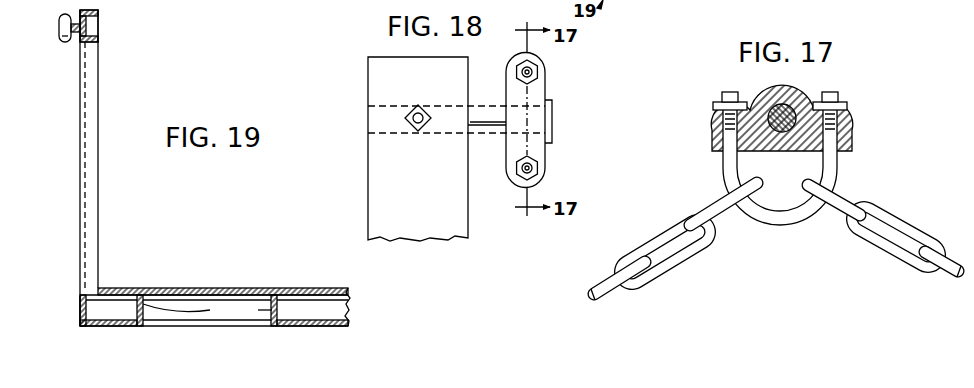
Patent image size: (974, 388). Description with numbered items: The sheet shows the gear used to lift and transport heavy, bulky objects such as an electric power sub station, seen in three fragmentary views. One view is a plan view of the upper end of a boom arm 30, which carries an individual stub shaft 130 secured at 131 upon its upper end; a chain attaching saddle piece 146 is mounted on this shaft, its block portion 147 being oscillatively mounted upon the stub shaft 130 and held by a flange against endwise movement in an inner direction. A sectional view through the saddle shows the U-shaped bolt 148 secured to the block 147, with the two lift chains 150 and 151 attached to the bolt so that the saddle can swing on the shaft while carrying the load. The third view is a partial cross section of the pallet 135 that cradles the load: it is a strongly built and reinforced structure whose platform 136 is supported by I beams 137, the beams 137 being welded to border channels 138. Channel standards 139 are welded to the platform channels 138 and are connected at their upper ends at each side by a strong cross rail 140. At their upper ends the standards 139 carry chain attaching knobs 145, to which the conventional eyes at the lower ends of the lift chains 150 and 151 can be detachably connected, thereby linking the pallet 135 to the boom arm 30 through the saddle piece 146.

In FIG. 18, the boom arm 30 is at (368, 182).
In FIG. 18, the stub shaft 130 is at (484, 128).
In FIG. 18, the securing point 131 is at (419, 132).
In FIG. 19, the pallet 135 is at (193, 286).
In FIG. 19, the platform 136 is at (262, 292).
In FIG. 19, the I beam 137 is at (207, 310).
In FIG. 19, the border channel 138 is at (80, 306).
In FIG. 19, the channel standard 139 is at (90, 98).
In FIG. 19, the cross rail 140 is at (98, 14).
In FIG. 19, the chain attaching knob 145 is at (59, 30).
In FIG. 18, the chain attaching saddle piece 146 is at (549, 153).
In FIG. 17, the chain attaching saddle piece 146 is at (855, 122).
In FIG. 18, the block portion 147 is at (546, 93).
In FIG. 17, the block portion 147 is at (714, 148).
In FIG. 18, the U-shaped bolt 148 is at (546, 63).
In FIG. 17, the U-shaped bolt 148 is at (833, 177).
In FIG. 17, the lift chain 150 is at (682, 258).
In FIG. 17, the lift chain 151 is at (893, 258).